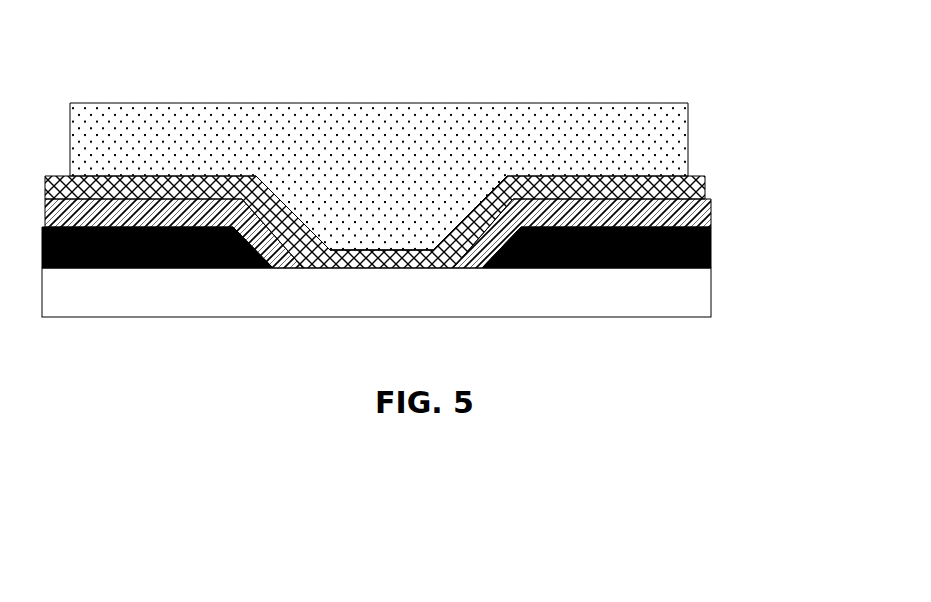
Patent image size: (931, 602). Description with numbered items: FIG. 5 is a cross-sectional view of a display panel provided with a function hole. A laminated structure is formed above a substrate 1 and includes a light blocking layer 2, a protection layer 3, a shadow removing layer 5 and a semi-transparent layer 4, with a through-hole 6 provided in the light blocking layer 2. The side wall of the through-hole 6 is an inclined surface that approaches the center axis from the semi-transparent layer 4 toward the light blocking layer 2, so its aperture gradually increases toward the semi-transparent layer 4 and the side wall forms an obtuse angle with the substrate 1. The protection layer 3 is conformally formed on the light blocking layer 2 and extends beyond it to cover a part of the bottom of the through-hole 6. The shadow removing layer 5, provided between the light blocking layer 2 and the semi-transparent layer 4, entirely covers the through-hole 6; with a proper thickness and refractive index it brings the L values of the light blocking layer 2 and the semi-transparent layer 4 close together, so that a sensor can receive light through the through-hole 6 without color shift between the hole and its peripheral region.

The substrate 1 is at (675, 298).
The light blocking layer 2 is at (710, 243).
The protection layer 3 is at (675, 222).
The semi-transparent layer 4 is at (675, 148).
The shadow removing layer 5 is at (680, 190).
The through-hole 6 is at (360, 227).